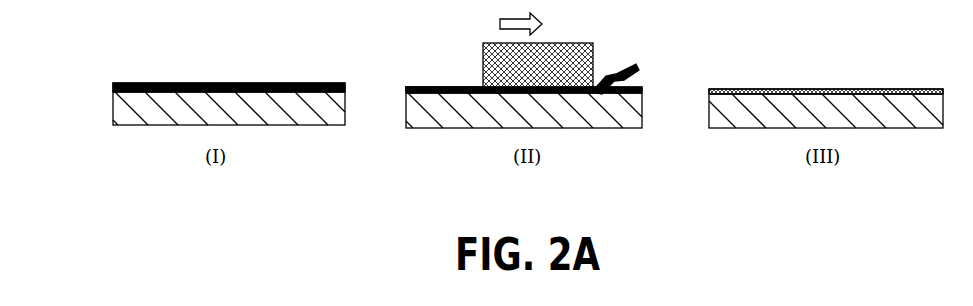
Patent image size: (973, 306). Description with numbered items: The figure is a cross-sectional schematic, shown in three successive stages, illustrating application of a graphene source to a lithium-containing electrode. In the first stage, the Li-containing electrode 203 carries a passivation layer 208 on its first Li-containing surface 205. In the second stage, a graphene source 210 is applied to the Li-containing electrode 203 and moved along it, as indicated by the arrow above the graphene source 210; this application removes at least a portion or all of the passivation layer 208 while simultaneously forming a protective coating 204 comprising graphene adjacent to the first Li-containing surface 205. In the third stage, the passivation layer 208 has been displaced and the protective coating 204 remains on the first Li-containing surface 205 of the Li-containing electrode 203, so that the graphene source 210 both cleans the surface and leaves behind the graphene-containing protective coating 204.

The Li-containing electrode 203 is at (148, 110).
The protective coating 204 is at (425, 88).
The first Li-containing surface 205 is at (113, 108).
The passivation layer 208 is at (146, 83).
The graphene source 210 is at (483, 52).